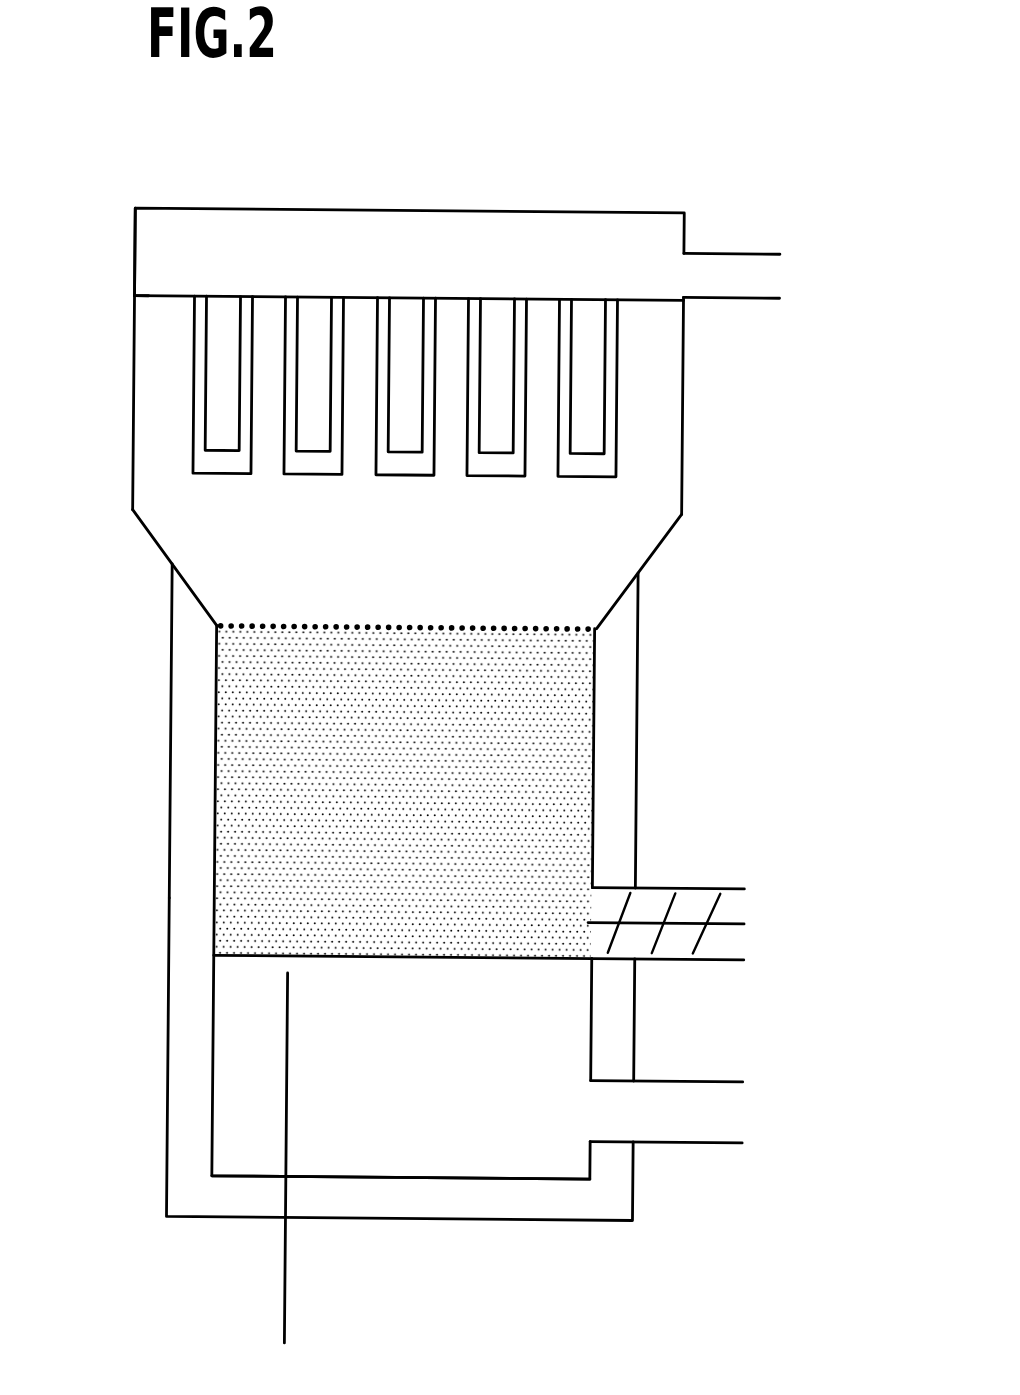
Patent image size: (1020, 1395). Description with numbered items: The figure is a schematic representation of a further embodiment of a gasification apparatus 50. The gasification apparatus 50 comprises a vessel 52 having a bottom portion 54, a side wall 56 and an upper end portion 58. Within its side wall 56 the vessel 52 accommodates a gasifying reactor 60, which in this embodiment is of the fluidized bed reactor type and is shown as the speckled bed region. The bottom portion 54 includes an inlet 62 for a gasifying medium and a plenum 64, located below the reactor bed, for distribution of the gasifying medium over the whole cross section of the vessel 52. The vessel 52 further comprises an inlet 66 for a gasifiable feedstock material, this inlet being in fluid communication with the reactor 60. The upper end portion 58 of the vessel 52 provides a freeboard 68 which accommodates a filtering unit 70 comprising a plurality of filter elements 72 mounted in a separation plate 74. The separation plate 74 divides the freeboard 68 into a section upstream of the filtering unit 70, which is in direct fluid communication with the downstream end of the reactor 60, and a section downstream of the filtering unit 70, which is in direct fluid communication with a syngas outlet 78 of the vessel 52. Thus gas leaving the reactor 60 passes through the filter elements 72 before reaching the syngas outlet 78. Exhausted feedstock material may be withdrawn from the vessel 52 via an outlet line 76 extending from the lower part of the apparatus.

The gasification apparatus 50 is at (594, 157).
The vessel 52 is at (157, 572).
The bottom portion 54 is at (157, 1118).
The side wall 56 is at (216, 826).
The upper end portion 58 is at (280, 198).
The gasifying reactor 60 is at (383, 808).
The inlet for gasifying medium 62 is at (711, 1140).
The plenum 64 is at (385, 1082).
The inlet for gasifiable feedstock material 66 is at (701, 886).
The freeboard 68 is at (226, 556).
The filtering unit 70 is at (358, 285).
The filter elements 72 is at (191, 356).
The separation plate 74 is at (178, 298).
The outlet line 76 is at (290, 1285).
The syngas outlet 78 is at (731, 250).